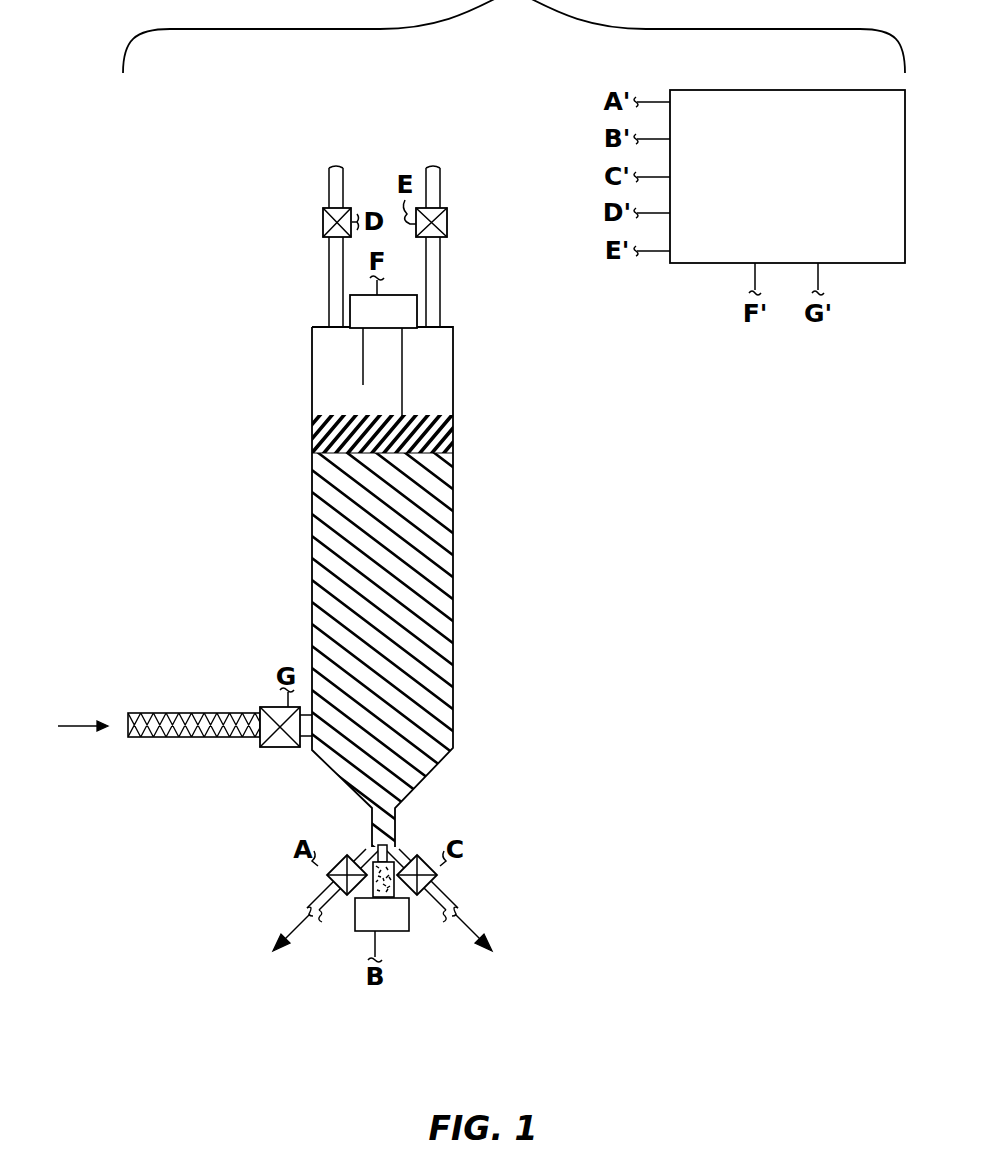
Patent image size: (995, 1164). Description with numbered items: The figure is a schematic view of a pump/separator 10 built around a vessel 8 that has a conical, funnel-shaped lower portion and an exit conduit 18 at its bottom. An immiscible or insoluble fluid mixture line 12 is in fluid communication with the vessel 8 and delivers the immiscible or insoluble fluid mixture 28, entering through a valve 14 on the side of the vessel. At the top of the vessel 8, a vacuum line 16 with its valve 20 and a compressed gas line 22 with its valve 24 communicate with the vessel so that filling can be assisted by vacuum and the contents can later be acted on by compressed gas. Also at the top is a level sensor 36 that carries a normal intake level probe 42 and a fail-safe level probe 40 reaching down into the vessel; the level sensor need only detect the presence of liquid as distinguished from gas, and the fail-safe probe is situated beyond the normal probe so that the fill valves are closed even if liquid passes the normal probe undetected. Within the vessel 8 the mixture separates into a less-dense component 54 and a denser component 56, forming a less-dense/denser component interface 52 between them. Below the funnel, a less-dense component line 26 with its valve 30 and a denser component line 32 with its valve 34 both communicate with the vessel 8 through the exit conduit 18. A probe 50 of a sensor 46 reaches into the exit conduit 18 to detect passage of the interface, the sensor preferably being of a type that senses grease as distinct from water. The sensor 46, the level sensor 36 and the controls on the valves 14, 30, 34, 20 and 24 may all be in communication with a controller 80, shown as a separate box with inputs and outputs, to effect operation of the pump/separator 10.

The vessel 8 is at (312, 550).
The pump/separator 10 is at (270, 407).
The immiscible or insoluble fluid mixture line 12 is at (183, 727).
The valve 14 is at (277, 712).
The vacuum line 16 is at (329, 296).
The exit conduit 18 is at (379, 822).
The valve 20 is at (323, 222).
The compressed gas line 22 is at (440, 296).
The valve 24 is at (447, 222).
The less-dense component line 26 is at (313, 897).
The immiscible or insoluble fluid mixture 28 is at (65, 727).
The valve 30 is at (341, 851).
The denser component line 32 is at (448, 897).
The valve 34 is at (424, 851).
The level sensor 36 is at (393, 308).
The fail-safe level probe 40 is at (362, 356).
The normal intake level probe 42 is at (402, 348).
The sensor 46 is at (392, 924).
The probe 50 is at (396, 842).
The less-dense/denser component interface 52 is at (312, 456).
The less-dense component 54 is at (418, 433).
The denser component 56 is at (418, 725).
The controller 80 is at (774, 201).